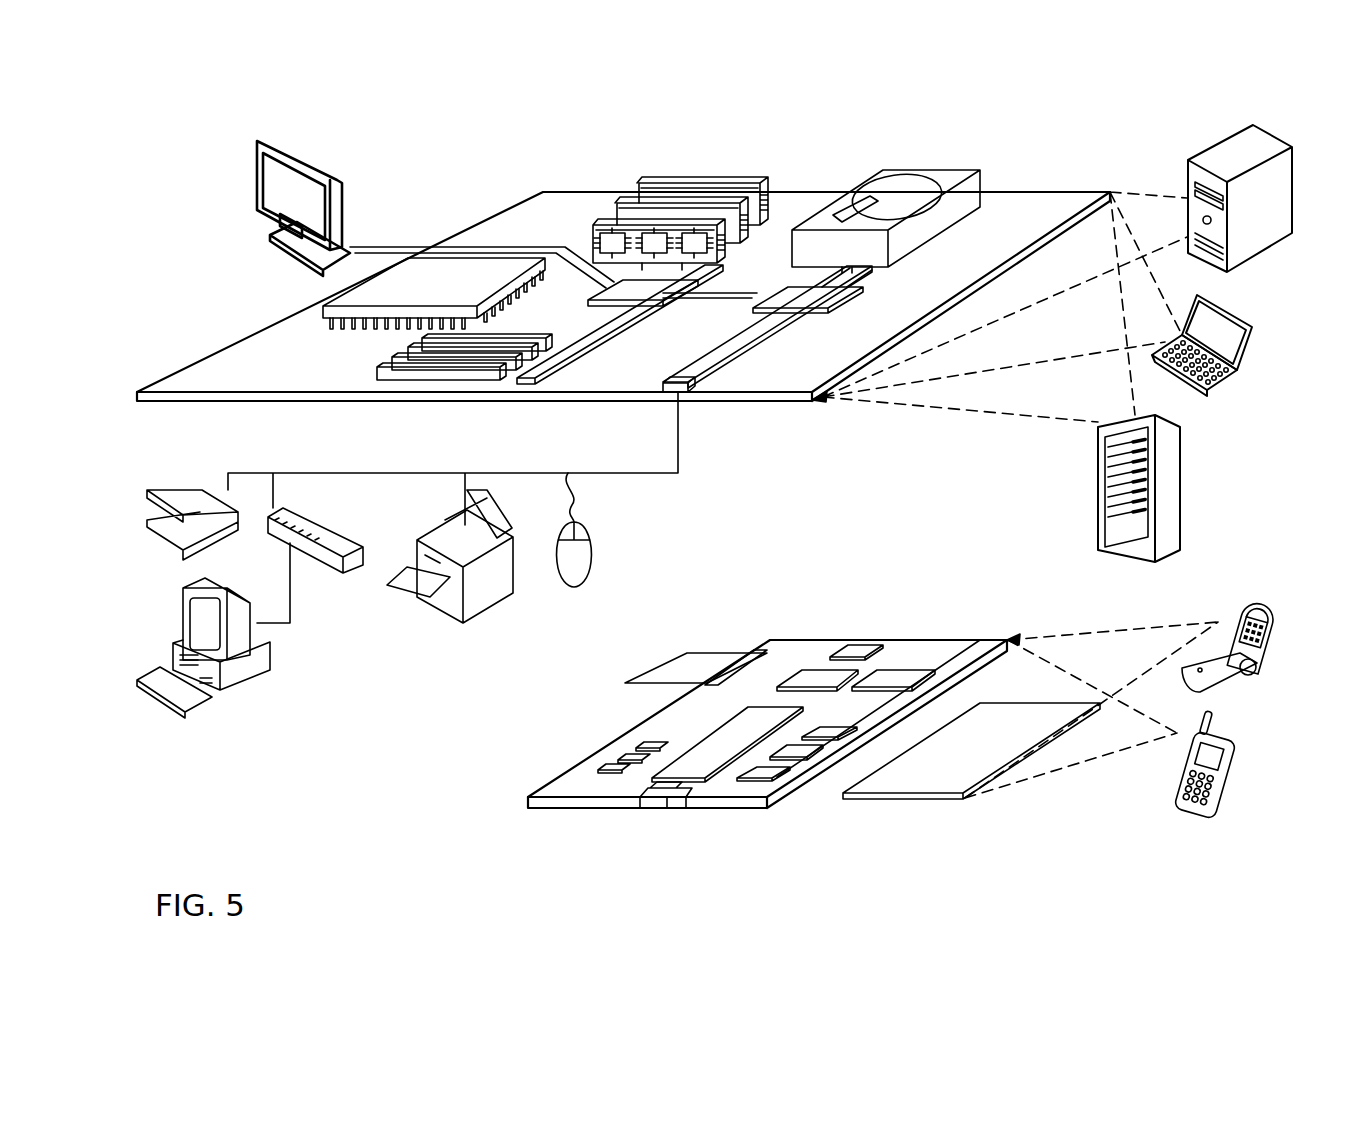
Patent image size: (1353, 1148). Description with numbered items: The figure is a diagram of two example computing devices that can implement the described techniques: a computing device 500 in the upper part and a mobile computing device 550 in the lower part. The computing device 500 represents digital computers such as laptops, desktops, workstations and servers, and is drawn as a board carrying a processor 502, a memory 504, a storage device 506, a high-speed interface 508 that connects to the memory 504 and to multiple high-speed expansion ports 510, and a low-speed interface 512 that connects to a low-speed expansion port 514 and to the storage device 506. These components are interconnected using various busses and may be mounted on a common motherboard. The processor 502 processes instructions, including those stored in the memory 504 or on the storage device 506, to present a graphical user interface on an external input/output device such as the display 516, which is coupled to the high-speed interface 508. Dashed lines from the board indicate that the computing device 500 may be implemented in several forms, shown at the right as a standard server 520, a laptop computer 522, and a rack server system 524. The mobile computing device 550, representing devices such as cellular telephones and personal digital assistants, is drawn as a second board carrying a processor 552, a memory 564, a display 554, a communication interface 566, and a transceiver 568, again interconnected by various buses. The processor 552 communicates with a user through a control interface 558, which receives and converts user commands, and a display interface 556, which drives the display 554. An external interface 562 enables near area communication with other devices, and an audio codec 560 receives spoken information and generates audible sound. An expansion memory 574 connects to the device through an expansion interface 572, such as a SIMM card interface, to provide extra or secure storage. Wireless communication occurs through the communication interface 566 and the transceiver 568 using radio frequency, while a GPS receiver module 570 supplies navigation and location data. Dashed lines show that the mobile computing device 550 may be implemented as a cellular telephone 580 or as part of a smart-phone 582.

The computing device 500 is at (451, 169).
The processor 502 is at (322, 307).
The memory 504 is at (655, 185).
The storage device 506 is at (883, 171).
The high-speed interface 508 is at (620, 290).
The high-speed expansion ports 510 is at (397, 367).
The low-speed interface 512 is at (788, 292).
The low-speed expansion port 514 is at (690, 395).
The display 516 is at (260, 145).
The standard server 520 is at (1188, 178).
The laptop computer 522 is at (1208, 392).
The rack server system 524 is at (1098, 511).
The mobile computing device 550 is at (506, 806).
The processor 552 is at (700, 767).
The display 554 is at (935, 786).
The display interface 556 is at (767, 772).
The control interface 558 is at (800, 751).
The audio codec 560 is at (827, 734).
The external interface 562 is at (665, 798).
The memory 564 is at (615, 752).
The communication interface 566 is at (817, 673).
The transceiver 568 is at (893, 677).
The GPS receiver module 570 is at (867, 645).
The expansion interface 572 is at (750, 650).
The expansion memory 574 is at (680, 651).
The cellular telephone 580 is at (1235, 597).
The smart-phone 582 is at (1180, 768).